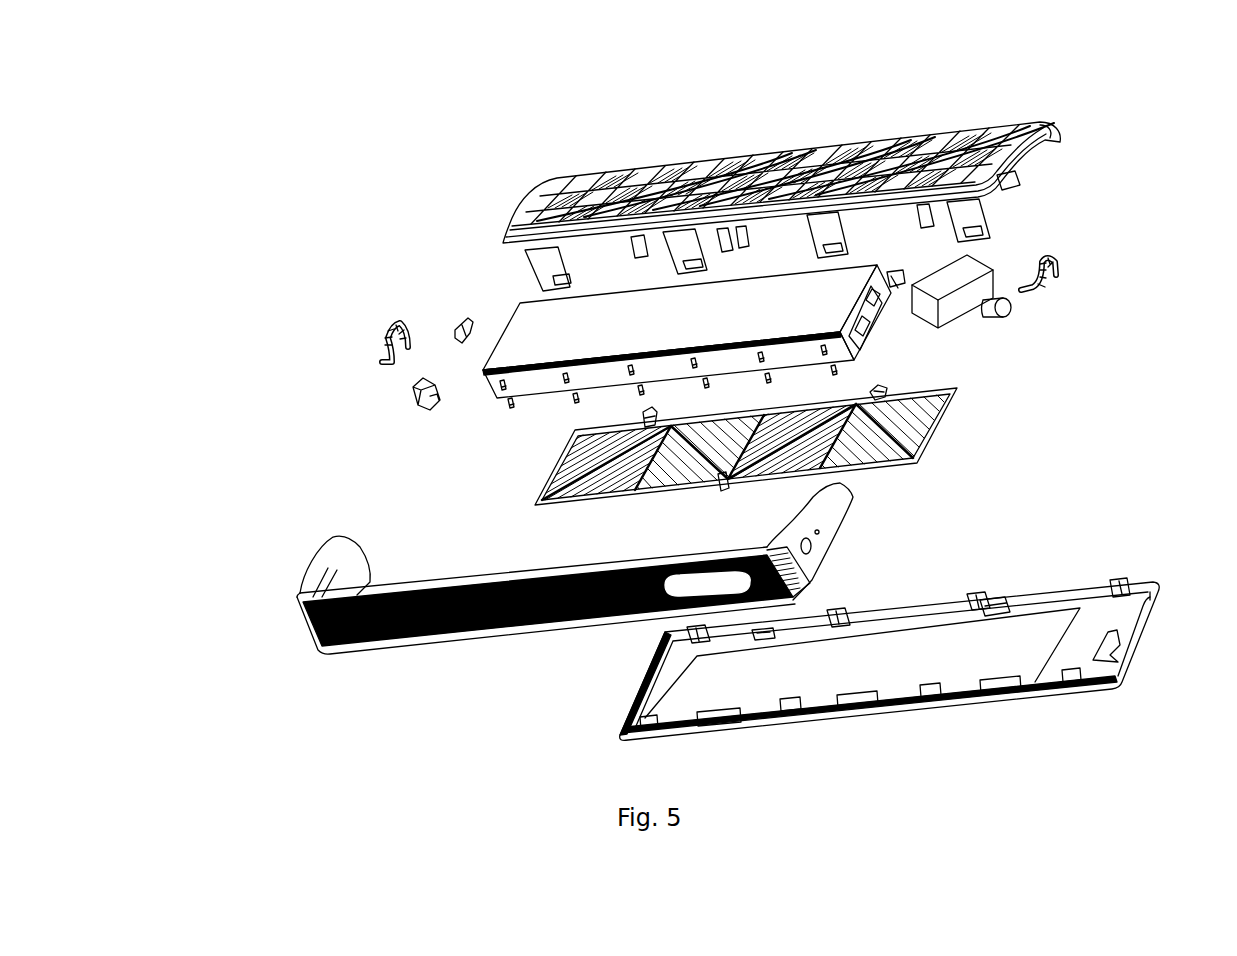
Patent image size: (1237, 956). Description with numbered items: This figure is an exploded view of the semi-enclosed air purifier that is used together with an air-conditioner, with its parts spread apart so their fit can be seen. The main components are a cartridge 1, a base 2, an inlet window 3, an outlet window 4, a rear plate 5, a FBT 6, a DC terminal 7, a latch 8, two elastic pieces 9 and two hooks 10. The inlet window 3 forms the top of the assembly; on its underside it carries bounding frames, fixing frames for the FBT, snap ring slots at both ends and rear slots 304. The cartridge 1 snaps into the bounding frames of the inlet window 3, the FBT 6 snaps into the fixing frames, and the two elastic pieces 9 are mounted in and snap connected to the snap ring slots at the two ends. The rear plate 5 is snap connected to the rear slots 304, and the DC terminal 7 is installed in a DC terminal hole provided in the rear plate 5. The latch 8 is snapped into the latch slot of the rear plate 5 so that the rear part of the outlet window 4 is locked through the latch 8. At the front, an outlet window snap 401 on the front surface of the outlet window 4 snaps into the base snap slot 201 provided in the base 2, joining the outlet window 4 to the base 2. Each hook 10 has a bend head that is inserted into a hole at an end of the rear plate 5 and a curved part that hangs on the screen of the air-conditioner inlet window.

The cartridge 1 is at (513, 330).
The base 2 is at (851, 630).
The inlet window 3 is at (720, 171).
The inlet window slot 304 is at (540, 273).
The outlet window 4 is at (821, 417).
The outlet window snap 401 is at (890, 388).
The rear plate 5 is at (330, 583).
The FBT 6 is at (983, 260).
The DC terminal 7 is at (997, 310).
The latch 8 is at (413, 398).
The elastic piece 9 is at (453, 330).
The hook 10 is at (382, 347).
The base snap slot 201 is at (1007, 608).